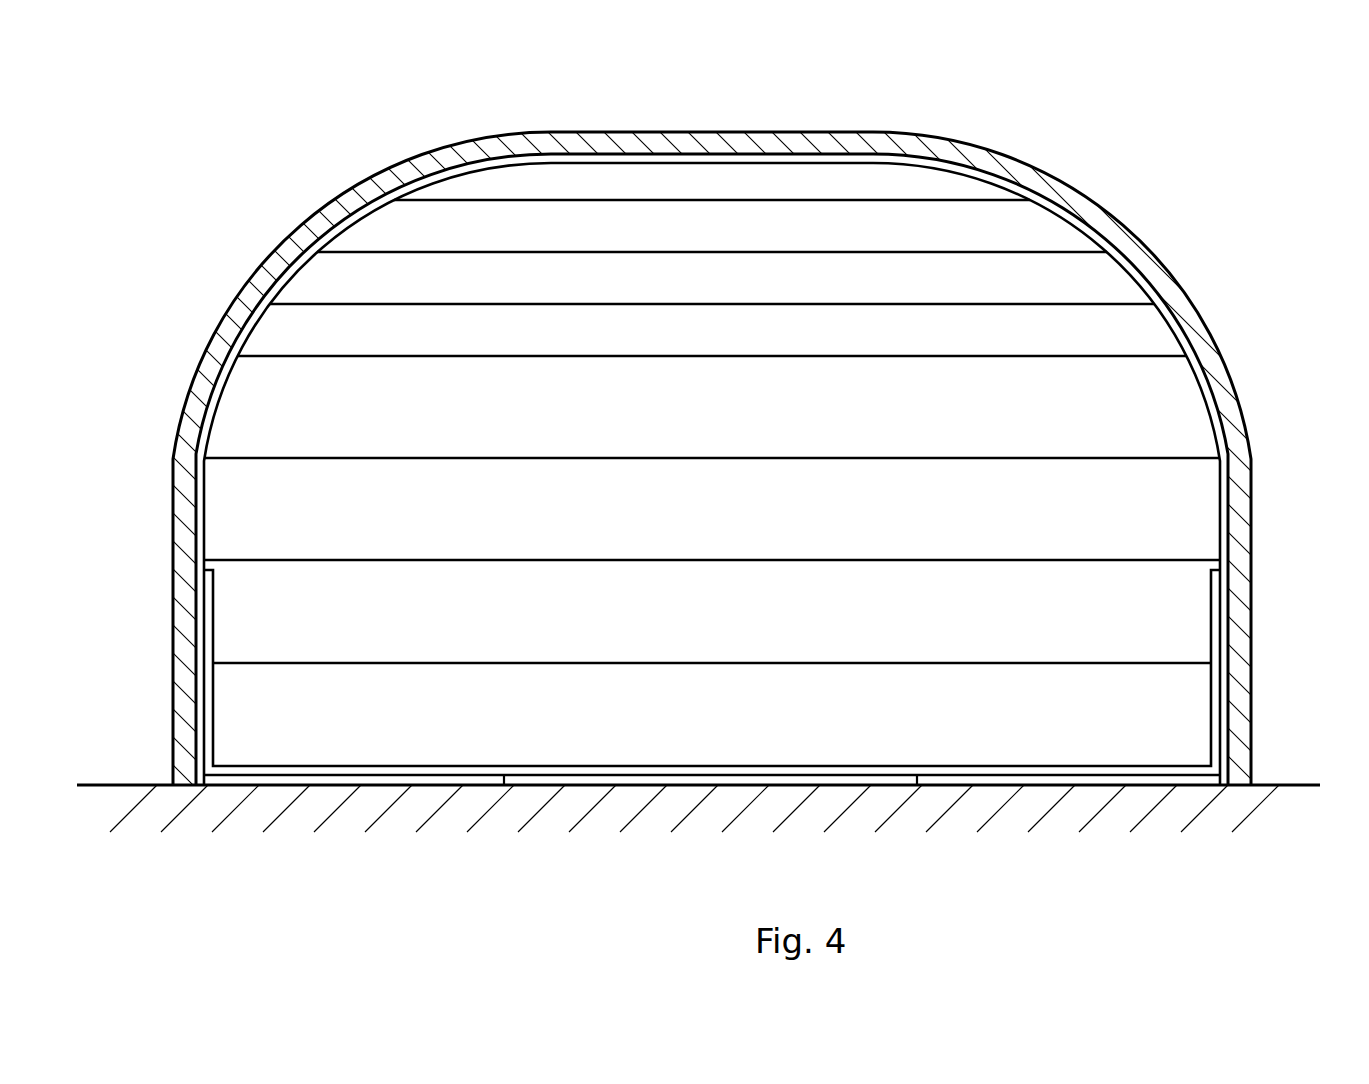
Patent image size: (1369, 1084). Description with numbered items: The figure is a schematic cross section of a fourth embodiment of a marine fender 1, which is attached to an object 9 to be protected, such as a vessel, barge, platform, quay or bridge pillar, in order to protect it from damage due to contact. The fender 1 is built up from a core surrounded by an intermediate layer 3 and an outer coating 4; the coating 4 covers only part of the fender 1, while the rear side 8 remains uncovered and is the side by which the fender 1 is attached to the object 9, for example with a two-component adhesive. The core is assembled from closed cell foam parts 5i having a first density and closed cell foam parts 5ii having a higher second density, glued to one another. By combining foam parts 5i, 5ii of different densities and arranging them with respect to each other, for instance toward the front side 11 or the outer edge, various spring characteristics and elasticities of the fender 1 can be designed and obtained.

The fender 1 is at (1166, 186).
The intermediate layer 3 is at (1207, 382).
The coating 4 is at (1172, 277).
The closed cell foam parts having a first density 5i is at (270, 715).
The closed cell foam parts having a second density 5ii is at (275, 332).
The rear side 8 is at (660, 806).
The object 9 is at (112, 818).
The front side 11 is at (880, 130).